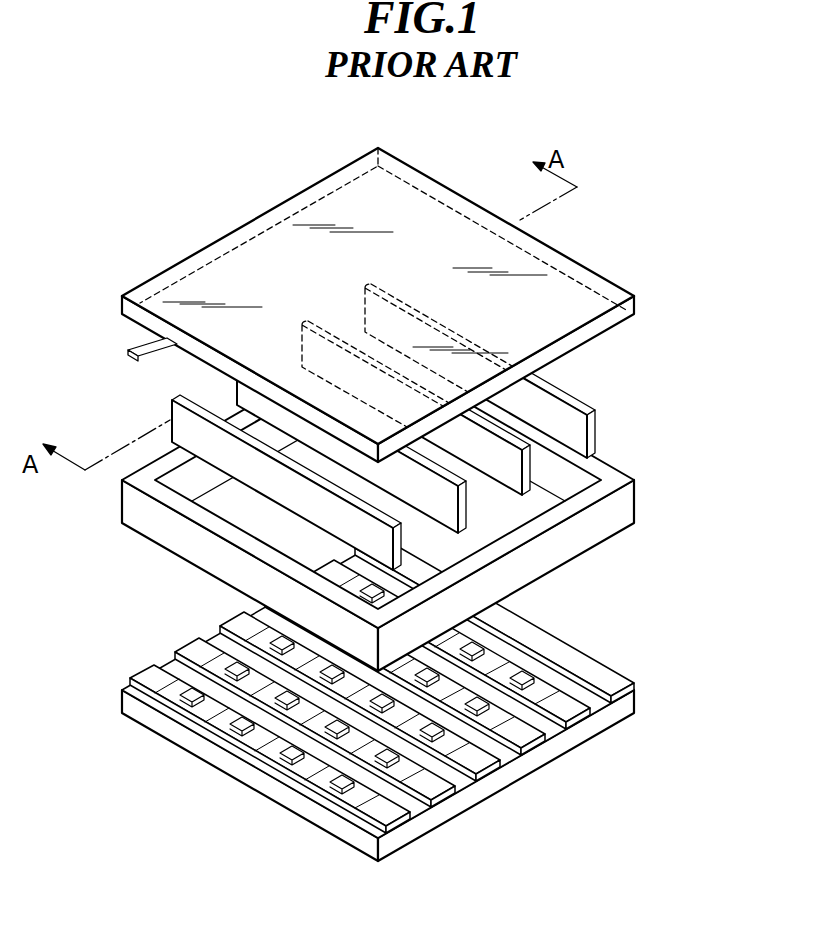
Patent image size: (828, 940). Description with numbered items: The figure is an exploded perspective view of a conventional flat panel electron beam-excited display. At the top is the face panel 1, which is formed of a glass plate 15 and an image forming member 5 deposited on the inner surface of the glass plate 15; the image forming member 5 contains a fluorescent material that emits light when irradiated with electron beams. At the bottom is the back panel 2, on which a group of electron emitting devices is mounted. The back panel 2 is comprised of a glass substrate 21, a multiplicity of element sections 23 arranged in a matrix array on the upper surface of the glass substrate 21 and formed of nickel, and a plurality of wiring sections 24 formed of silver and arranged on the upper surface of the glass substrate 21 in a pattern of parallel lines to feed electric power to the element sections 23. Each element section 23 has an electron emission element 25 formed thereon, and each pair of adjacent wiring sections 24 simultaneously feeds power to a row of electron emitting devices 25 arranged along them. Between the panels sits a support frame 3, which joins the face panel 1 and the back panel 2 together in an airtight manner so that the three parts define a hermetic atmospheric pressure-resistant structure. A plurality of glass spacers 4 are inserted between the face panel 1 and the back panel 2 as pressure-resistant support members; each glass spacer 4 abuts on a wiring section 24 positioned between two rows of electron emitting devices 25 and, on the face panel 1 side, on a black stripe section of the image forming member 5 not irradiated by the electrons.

The face panel 1 is at (412, 276).
The glass plate 15 is at (618, 271).
The image forming member 5 is at (598, 344).
The glass spacers 4 is at (598, 432).
The support frame 3 is at (622, 516).
The back panel 2 is at (410, 727).
The glass substrate 21 is at (184, 738).
The element sections 23 is at (586, 686).
The wiring sections 24 is at (584, 722).
The electron emission element 25 is at (540, 678).